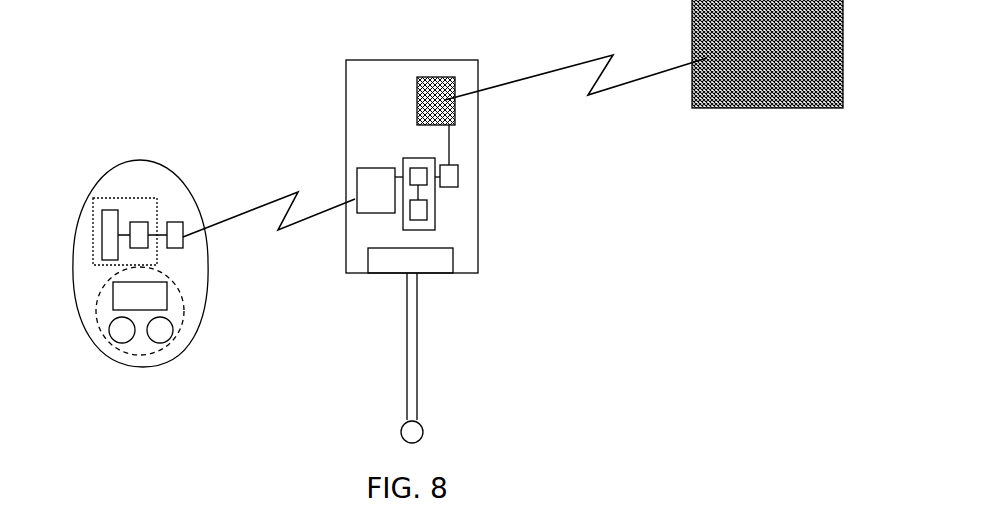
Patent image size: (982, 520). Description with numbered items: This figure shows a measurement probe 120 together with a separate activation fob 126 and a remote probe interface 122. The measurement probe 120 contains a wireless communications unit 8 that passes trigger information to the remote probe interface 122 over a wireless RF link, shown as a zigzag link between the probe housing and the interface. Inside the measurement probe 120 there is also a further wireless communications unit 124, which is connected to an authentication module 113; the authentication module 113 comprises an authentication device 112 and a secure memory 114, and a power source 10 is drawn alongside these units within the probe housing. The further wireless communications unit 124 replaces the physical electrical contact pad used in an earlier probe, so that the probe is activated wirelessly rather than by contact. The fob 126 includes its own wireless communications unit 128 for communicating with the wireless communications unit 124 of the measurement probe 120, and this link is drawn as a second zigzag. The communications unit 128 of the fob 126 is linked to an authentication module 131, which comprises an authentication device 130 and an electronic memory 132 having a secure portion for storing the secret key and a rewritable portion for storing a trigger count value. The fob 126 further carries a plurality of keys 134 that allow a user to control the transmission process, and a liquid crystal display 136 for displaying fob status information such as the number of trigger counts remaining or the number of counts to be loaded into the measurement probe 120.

The wireless communications unit 8 is at (457, 87).
The power source 10 is at (458, 180).
The authentication device 112 is at (410, 158).
The authentication module 113 is at (418, 168).
The secure memory 114 is at (427, 212).
The measurement probe 120 is at (478, 265).
The remote probe interface 122 is at (768, 108).
The wireless communications unit 124 is at (380, 190).
The fob 126 is at (176, 350).
The wireless communications unit 128 is at (175, 222).
The authentication device 130 is at (138, 222).
The authentication module 131 is at (93, 243).
The electronic memory 132 is at (108, 210).
The keys 134 is at (162, 345).
The liquid crystal display 136 is at (113, 298).